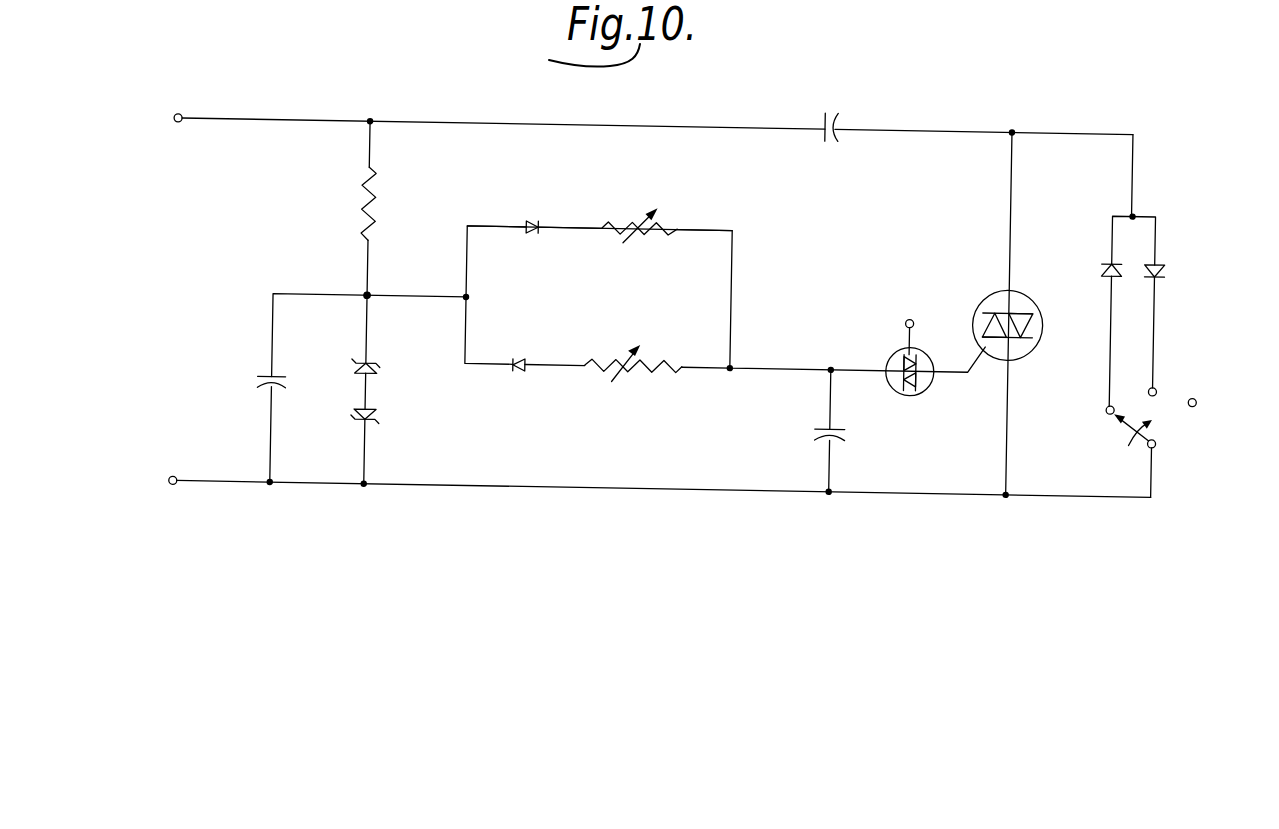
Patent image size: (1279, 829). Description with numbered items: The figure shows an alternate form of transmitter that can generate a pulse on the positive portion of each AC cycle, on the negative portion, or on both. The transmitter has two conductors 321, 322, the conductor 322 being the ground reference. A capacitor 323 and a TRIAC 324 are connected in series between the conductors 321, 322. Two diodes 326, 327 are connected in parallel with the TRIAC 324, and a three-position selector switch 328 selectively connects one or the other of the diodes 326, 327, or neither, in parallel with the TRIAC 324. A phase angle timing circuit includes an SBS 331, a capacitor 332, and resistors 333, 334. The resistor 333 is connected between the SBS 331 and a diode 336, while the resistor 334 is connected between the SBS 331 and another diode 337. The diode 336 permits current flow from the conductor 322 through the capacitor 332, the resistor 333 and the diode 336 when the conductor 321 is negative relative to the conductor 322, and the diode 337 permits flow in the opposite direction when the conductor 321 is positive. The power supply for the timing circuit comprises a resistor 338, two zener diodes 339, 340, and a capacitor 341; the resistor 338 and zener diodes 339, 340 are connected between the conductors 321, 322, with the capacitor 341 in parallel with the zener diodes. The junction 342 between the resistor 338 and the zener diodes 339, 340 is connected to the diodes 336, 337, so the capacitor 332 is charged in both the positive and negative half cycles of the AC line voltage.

The conductor 321 is at (262, 125).
The conductor 322 is at (235, 490).
The capacitor 323 is at (828, 108).
The TRIAC 324 is at (984, 291).
The diode 326 is at (1098, 264).
The diode 327 is at (1168, 266).
The three-position selector switch 328 is at (1119, 436).
The SBS 331 is at (889, 351).
The capacitor 332 is at (848, 430).
The resistor 333 is at (657, 372).
The resistor 334 is at (666, 224).
The diode 336 is at (521, 376).
The diode 337 is at (529, 223).
The resistor 338 is at (360, 201).
The zener diode 339 is at (383, 374).
The zener diode 340 is at (381, 424).
The capacitor 341 is at (258, 388).
The junction 342 is at (366, 299).